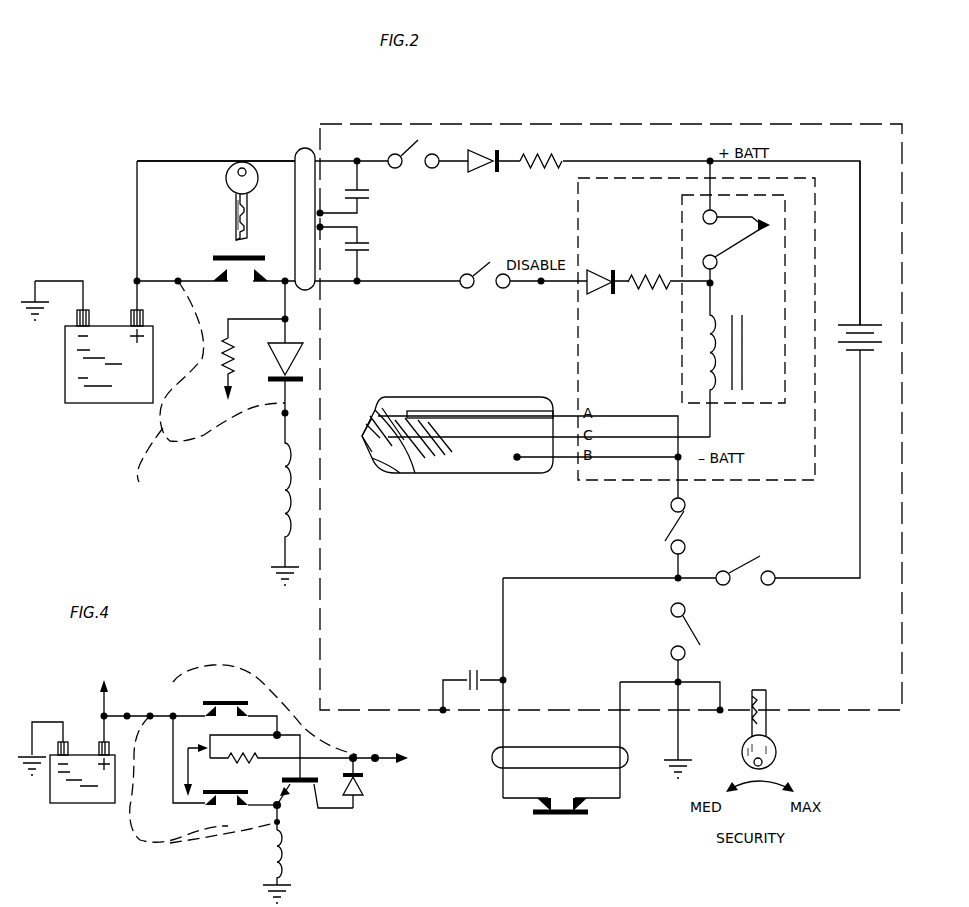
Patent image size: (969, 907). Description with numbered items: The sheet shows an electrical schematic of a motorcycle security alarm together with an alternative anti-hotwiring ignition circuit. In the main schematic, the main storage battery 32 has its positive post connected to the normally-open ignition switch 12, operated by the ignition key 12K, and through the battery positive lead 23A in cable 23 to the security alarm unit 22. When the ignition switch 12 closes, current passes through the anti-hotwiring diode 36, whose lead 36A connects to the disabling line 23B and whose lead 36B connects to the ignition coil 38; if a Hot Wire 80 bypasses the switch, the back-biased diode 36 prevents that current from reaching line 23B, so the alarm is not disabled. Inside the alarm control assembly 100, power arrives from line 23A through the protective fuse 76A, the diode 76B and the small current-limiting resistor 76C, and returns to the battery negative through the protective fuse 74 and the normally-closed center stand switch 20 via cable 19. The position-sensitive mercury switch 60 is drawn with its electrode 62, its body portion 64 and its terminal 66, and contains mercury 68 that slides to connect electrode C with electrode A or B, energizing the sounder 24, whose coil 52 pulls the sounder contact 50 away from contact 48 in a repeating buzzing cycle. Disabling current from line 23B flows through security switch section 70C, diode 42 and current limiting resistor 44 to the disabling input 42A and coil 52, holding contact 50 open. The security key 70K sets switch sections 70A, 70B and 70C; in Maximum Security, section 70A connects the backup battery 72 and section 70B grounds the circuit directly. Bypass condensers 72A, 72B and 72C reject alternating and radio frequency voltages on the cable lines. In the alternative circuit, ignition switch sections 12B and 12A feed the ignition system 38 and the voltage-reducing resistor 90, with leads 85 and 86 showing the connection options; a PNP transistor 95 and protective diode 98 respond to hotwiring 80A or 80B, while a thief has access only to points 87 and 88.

In FIG. 2, the ignition switch 12 is at (245, 260).
In FIG. 2, the ignition key 12K is at (274, 193).
In FIG. 4, the second ignition switch section 12A is at (220, 698).
In FIG. 4, the first ignition switch section 12B is at (220, 776).
In FIG. 2, the cable 19 is at (492, 758).
In FIG. 2, the center stand switch 20 is at (522, 815).
In FIG. 2, the security alarm unit 22 is at (874, 126).
In FIG. 2, the cable 23 is at (305, 148).
In FIG. 2, the battery positive lead 23A is at (258, 161).
In FIG. 4, the battery positive lead 23A is at (102, 696).
In FIG. 2, the disabling line 23B is at (284, 295).
In FIG. 4, the disabling line 23B is at (378, 750).
In FIG. 2, the sounder 24 is at (786, 276).
In FIG. 2, the main storage battery 32 is at (92, 392).
In FIG. 4, the main storage battery 32 is at (62, 797).
In FIG. 2, the anti-hotwiring diode 36 is at (276, 344).
In FIG. 2, the diode lead 36A is at (291, 328).
In FIG. 2, the diode lead 36B is at (256, 399).
In FIG. 2, the ignition coil 38 is at (286, 495).
In FIG. 4, the ignition coil 38 is at (282, 858).
In FIG. 2, the diode 42 is at (594, 268).
In FIG. 2, the disabling input 42A is at (541, 284).
In FIG. 2, the current limiting resistor 44 is at (640, 275).
In FIG. 2, the contact 48 is at (752, 217).
In FIG. 2, the sounder contact 50 is at (742, 250).
In FIG. 2, the coil 52 is at (718, 368).
In FIG. 2, the position-sensitive mercury switch 60 is at (494, 388).
In FIG. 2, the sensor element 62 is at (379, 412).
In FIG. 2, the sensor mounting 64 is at (450, 466).
In FIG. 2, the sensor terminal 66 is at (518, 458).
In FIG. 2, the mercury 68 is at (377, 450).
In FIG. 2, the security switch section 70A is at (748, 562).
In FIG. 2, the security switch section 70B is at (686, 622).
In FIG. 2, the security switch section 70C is at (490, 262).
In FIG. 2, the security key 70K is at (776, 748).
In FIG. 2, the backup battery 72 is at (882, 335).
In FIG. 2, the bypass condenser 72A is at (372, 194).
In FIG. 2, the bypass condenser 72B is at (372, 247).
In FIG. 2, the bypass condenser 72C is at (470, 670).
In FIG. 2, the protective fuse 74 is at (684, 511).
In FIG. 2, the protective fuse 76A is at (418, 140).
In FIG. 2, the diode 76B is at (478, 150).
In FIG. 2, the current-limiting resistor 76C is at (538, 154).
In FIG. 2, the Hot Wire 80 is at (206, 398).
In FIG. 4, the hotwiring 80A is at (126, 848).
In FIG. 4, the hotwiring 80B is at (242, 666).
In FIG. 4, the lead 85 is at (170, 803).
In FIG. 4, the lead 86 is at (294, 714).
In FIG. 4, the point 87 is at (358, 762).
In FIG. 4, the point 88 is at (282, 824).
In FIG. 2, the voltage-reducing resistor 90 is at (222, 368).
In FIG. 4, the voltage-reducing resistor 90 is at (240, 752).
In FIG. 4, the PNP transistor 95 is at (304, 775).
In FIG. 4, the diode 98 is at (365, 790).
In FIG. 2, the alarm control assembly 100 is at (595, 177).